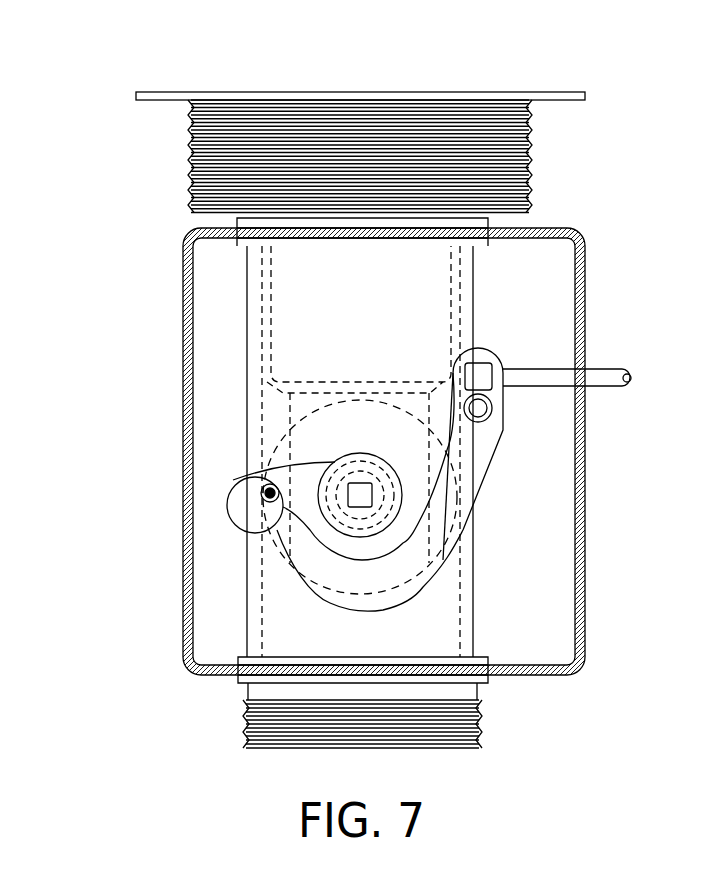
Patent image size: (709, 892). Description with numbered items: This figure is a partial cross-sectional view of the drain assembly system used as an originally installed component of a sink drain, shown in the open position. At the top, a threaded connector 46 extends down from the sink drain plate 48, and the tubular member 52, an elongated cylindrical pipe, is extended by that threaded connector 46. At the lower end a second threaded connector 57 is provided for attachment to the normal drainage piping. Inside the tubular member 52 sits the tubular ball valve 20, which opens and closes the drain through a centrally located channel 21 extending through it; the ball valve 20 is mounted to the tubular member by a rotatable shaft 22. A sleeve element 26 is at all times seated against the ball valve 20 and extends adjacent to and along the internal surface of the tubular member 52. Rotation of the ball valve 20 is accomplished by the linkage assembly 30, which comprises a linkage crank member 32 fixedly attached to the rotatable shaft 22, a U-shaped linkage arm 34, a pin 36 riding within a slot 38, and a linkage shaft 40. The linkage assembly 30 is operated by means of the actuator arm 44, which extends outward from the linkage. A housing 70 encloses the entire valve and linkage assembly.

The ball valve 20 is at (282, 435).
The channel 21 is at (343, 413).
The rotatable shaft 22 is at (373, 495).
The sleeve element 26 is at (263, 262).
The linkage assembly 30 is at (504, 428).
The linkage crank member 32 is at (252, 488).
The U-shaped linkage arm 34 is at (410, 592).
The pin 36 is at (276, 530).
The slot 38 is at (266, 495).
The linkage shaft 40 is at (484, 362).
The actuator arm 44 is at (603, 370).
The threaded connector 46 is at (210, 145).
The sink drain plate 48 is at (547, 97).
The tubular member 52 is at (248, 308).
The threaded connector 57 is at (482, 728).
The housing 70 is at (568, 232).